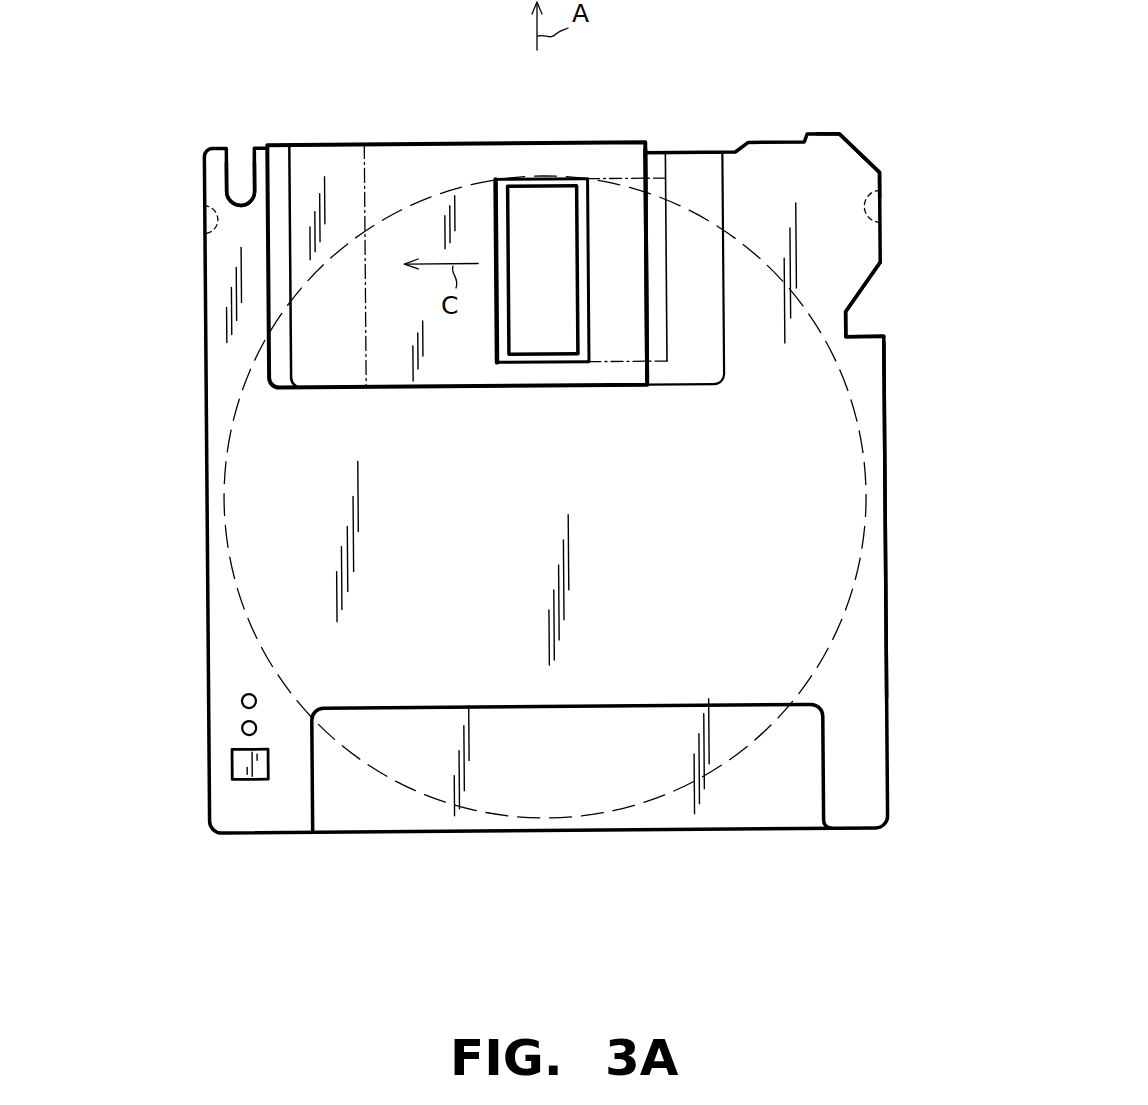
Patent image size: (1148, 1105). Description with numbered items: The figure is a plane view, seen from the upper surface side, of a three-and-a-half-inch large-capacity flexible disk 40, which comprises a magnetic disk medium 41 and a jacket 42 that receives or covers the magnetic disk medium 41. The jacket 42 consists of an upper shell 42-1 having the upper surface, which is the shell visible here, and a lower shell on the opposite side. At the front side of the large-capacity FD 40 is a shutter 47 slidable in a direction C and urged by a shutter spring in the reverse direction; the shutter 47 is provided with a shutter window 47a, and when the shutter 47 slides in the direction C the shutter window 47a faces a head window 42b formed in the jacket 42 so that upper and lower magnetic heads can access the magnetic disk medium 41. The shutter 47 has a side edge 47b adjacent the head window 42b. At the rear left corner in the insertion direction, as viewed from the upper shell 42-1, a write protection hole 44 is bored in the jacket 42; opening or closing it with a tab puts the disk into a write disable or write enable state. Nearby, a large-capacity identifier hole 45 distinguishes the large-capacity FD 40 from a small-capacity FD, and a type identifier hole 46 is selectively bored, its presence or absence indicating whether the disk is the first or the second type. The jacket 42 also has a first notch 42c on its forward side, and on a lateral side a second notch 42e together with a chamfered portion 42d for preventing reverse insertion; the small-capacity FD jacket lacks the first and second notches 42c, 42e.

The large-capacity flexible disk 40 is at (252, 848).
The magnetic disk medium 41 is at (837, 632).
The jacket 42 is at (870, 530).
The upper shell 42-1 is at (884, 441).
The head window 42b is at (571, 233).
The first notch 42c is at (243, 153).
The chamfered portion 42d is at (856, 142).
The second notch 42e is at (868, 328).
The write protection hole 44 is at (230, 768).
The large-capacity identifier hole 45 is at (240, 728).
The type identifier hole 46 is at (240, 701).
The shutter 47 is at (453, 372).
The shutter window 47a is at (576, 363).
The shutter side edge 47b is at (648, 142).